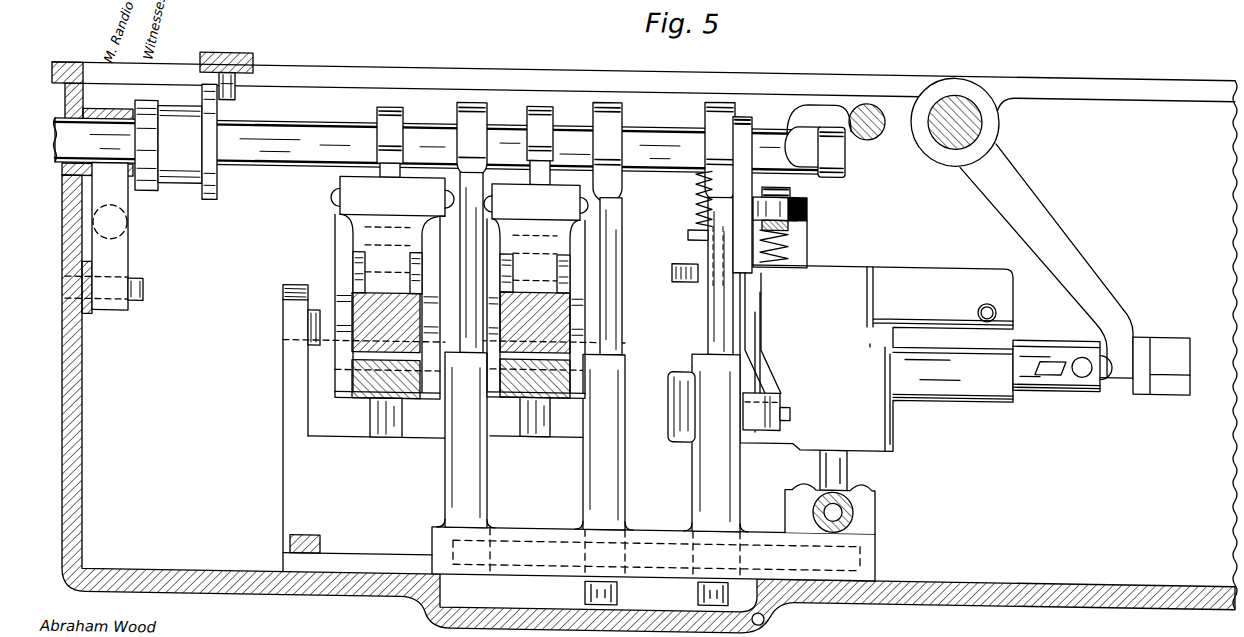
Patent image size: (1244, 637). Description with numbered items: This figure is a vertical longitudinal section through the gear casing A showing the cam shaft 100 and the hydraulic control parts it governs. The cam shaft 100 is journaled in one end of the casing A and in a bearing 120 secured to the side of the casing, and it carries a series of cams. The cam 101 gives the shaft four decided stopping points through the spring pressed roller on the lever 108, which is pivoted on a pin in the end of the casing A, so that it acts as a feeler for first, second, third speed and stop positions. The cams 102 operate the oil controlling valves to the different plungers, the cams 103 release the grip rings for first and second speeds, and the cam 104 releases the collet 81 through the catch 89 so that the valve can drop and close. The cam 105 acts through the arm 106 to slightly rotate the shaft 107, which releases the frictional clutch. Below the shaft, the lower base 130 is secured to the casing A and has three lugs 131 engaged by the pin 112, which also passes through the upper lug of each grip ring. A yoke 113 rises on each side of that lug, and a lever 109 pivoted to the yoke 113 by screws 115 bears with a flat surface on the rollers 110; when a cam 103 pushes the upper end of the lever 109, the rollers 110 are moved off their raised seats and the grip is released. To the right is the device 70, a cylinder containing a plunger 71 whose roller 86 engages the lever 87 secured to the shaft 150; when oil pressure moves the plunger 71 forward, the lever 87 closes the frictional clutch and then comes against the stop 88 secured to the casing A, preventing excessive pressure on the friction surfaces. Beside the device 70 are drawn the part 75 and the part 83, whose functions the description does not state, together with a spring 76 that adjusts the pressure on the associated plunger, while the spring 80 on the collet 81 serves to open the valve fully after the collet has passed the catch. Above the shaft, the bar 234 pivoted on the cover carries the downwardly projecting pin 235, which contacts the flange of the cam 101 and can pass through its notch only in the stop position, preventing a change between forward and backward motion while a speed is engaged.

The device 70 is at (876, 359).
The plunger 71 is at (1056, 365).
The plug 75 is at (808, 202).
The spring 76 is at (790, 233).
The spring 80 is at (696, 201).
The collet 81 is at (688, 229).
The pin block 83 is at (790, 406).
The roller 86 is at (1098, 368).
The lever 87 is at (1046, 261).
The stop 88 is at (1185, 341).
The catch 89 is at (749, 268).
The cam shaft 100 is at (437, 146).
The cam 101 is at (176, 141).
The cam 102 is at (592, 315).
The cam 103 is at (403, 109).
The cam 104 is at (736, 115).
The cam 105 is at (801, 148).
The arm 106 is at (819, 120).
The shaft 107 is at (880, 135).
The lever 108 is at (104, 236).
The lever 109 is at (460, 308).
The rollers 110 is at (333, 265).
The pin 112 is at (318, 340).
The yoke 113 is at (355, 248).
The screws 115 is at (332, 192).
The bearing 120 is at (845, 151).
The base 130 is at (364, 496).
The lugs 131 is at (292, 396).
The shaft 150 is at (984, 109).
The bar 234 is at (235, 51).
The pin 235 is at (236, 93).
The gear casing A is at (1042, 542).